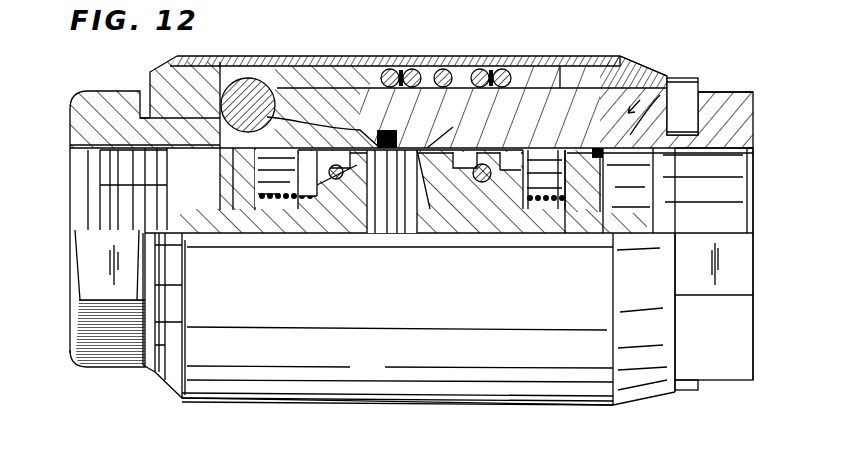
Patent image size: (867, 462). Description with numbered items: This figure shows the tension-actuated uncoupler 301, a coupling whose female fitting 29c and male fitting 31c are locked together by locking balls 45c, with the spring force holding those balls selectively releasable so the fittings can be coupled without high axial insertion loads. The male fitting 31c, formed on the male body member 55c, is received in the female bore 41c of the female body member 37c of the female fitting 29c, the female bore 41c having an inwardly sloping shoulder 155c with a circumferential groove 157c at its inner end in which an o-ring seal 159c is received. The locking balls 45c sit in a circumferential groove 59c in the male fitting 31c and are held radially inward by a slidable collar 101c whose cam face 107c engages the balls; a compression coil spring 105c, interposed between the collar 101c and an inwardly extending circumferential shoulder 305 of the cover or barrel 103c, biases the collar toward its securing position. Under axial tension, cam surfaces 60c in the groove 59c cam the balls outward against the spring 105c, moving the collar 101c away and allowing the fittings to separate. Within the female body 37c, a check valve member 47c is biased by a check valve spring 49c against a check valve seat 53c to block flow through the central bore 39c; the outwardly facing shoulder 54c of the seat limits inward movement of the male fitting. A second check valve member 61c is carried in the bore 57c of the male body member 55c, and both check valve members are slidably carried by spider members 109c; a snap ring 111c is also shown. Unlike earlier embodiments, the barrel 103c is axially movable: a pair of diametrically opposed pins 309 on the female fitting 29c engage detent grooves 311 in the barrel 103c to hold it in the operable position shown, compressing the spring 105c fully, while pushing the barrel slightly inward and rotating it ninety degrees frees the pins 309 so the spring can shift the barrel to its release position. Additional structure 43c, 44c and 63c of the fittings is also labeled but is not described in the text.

The male body member 55c is at (88, 103).
The male fitting 31c is at (118, 92).
The bore 57c is at (103, 190).
The body block 43c is at (220, 62).
The cam face 107c is at (247, 104).
The locking balls 45c is at (323, 130).
The sleeve shoulder 44c is at (335, 128).
The slidable collar 101c is at (392, 64).
The inwardly sloping shoulder 155c is at (352, 62).
The circumferential groove 157c is at (433, 165).
The compression coil spring 105c is at (480, 64).
The female bore 41c is at (490, 62).
The circumferential shoulder 305 is at (545, 62).
The check valve member 47c is at (590, 60).
The check valve spring 49c is at (623, 97).
The female body member 37c is at (668, 78).
The detent grooves 311 is at (695, 72).
The snap ring 111c is at (699, 68).
The female fitting 29c is at (740, 92).
The o-ring seal 159c is at (409, 200).
The circumferential groove 59c is at (220, 188).
The cam surfaces 60c is at (232, 158).
The lower body 63c is at (333, 207).
The outwardly facing shoulder 54c is at (400, 185).
The check valve member 61c is at (413, 170).
The check valve seat 53c is at (445, 175).
The spider member 109c is at (660, 207).
The barrel 103c is at (552, 410).
The uncoupler 301 is at (234, 414).
The central bore 39c is at (757, 152).
The pins 309 is at (725, 56).